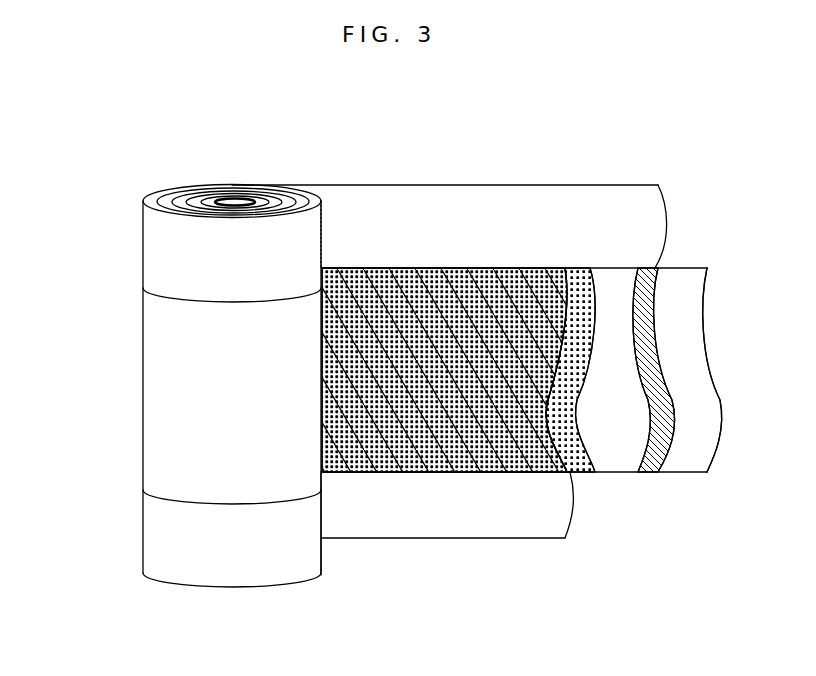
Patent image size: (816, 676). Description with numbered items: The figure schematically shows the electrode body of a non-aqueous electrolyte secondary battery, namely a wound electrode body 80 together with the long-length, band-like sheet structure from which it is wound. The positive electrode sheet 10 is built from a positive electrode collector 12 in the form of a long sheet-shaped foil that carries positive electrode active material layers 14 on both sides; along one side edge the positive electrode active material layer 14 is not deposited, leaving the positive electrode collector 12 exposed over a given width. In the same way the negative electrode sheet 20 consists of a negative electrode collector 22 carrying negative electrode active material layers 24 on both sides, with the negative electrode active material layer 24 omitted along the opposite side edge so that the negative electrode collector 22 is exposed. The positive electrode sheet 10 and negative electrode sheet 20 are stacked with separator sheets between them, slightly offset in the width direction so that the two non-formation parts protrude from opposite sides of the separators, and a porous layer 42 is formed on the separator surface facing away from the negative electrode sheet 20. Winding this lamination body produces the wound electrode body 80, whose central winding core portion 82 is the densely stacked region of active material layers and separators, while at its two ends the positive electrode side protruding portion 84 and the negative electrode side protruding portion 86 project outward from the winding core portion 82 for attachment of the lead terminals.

The positive electrode sheet 10 is at (415, 185).
The positive electrode collector 12 is at (629, 198).
The positive electrode active material layer 14 is at (644, 280).
The negative electrode sheet 20 is at (356, 538).
The negative electrode collector 22 is at (425, 522).
The negative electrode active material layer 24 is at (522, 472).
The porous layer 42 is at (580, 266).
The wound electrode body 80 is at (143, 170).
The winding core portion 82 is at (156, 404).
The positive electrode side protruding portion 84 is at (156, 268).
The negative electrode side protruding portion 86 is at (156, 534).